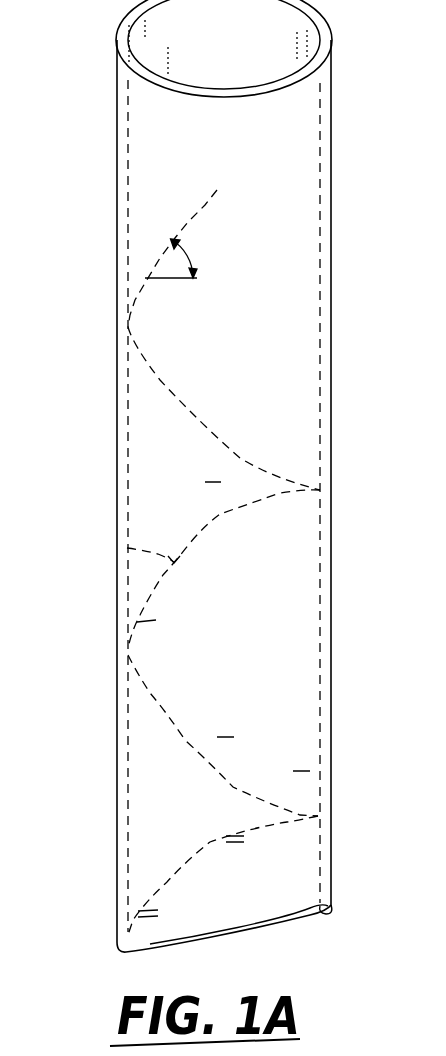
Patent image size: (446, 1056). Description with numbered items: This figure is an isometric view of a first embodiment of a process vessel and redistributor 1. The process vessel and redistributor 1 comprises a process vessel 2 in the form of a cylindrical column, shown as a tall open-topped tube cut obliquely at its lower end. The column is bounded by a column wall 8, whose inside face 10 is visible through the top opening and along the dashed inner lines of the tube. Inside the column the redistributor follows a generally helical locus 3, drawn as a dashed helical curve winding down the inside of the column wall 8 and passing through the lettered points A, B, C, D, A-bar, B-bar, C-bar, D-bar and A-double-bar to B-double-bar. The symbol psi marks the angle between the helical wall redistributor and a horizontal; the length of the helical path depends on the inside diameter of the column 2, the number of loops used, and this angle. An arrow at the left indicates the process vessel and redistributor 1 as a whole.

The process vessel and redistributor 1 is at (97, 380).
The process vessel 2 is at (117, 205).
The helical locus 3 is at (127, 548).
The column wall 8 is at (320, 30).
The inside face 10 is at (182, 50).